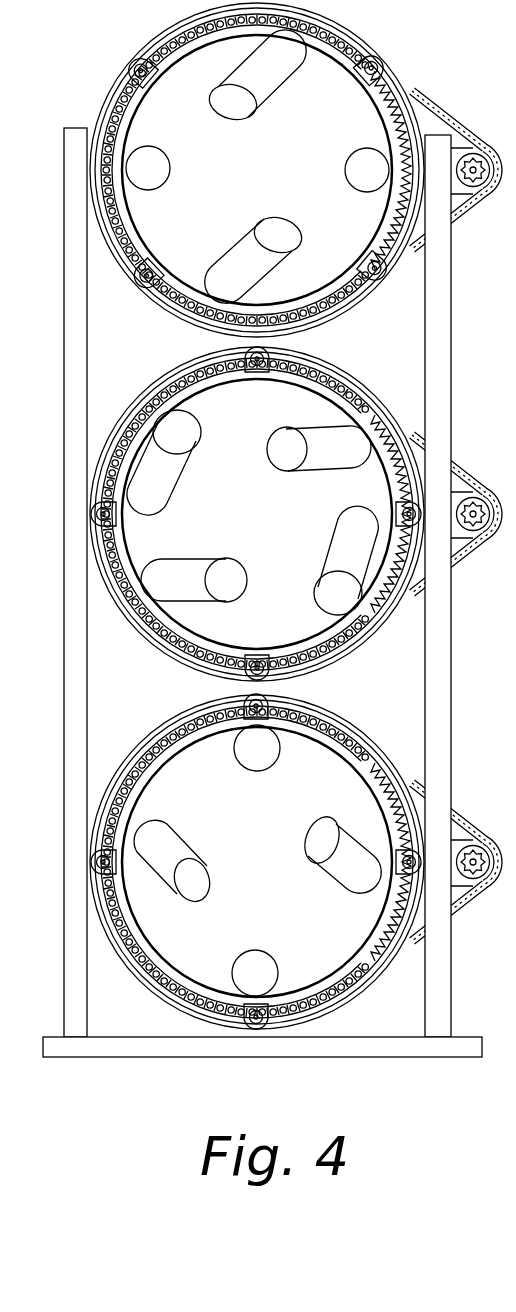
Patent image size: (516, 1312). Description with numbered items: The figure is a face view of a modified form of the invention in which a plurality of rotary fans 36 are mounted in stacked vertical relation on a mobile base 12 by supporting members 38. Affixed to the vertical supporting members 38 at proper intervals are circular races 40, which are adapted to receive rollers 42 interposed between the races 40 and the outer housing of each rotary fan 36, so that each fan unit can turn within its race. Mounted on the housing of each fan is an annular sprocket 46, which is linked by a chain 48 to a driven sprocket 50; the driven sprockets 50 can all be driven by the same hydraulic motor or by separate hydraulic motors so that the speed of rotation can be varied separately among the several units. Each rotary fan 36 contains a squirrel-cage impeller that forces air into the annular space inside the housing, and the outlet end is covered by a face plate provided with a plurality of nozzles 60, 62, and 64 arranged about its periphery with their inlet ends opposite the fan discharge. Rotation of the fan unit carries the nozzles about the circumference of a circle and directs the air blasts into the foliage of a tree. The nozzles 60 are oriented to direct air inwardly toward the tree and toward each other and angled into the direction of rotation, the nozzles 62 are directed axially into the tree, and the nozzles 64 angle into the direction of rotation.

The mobile base 12 is at (372, 1050).
The rotary fan 36 is at (420, 80).
The supporting members 38 is at (82, 337).
The circular races 40 is at (116, 76).
The rollers 42 is at (368, 58).
The annular sprocket 46 is at (397, 221).
The chain 48 is at (460, 207).
The driven sprocket 50 is at (479, 160).
The nozzles 60 is at (276, 88).
The nozzles 62 is at (170, 164).
The nozzles 64 is at (180, 460).